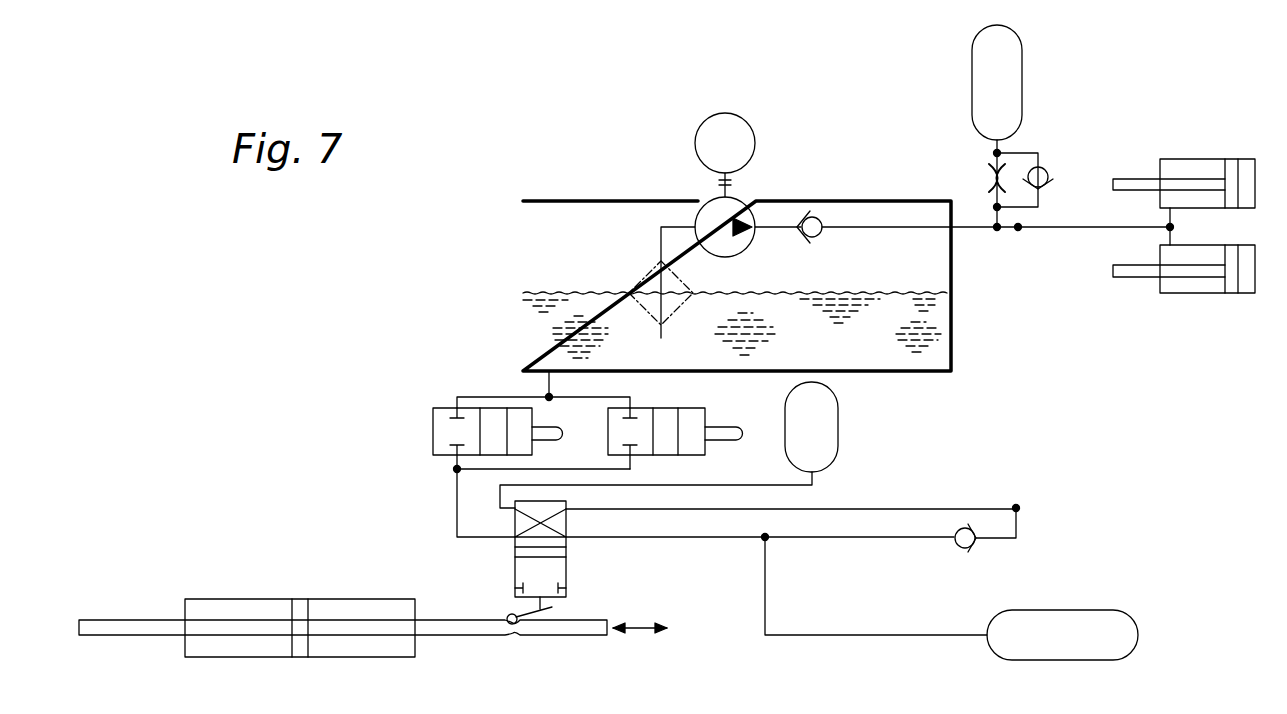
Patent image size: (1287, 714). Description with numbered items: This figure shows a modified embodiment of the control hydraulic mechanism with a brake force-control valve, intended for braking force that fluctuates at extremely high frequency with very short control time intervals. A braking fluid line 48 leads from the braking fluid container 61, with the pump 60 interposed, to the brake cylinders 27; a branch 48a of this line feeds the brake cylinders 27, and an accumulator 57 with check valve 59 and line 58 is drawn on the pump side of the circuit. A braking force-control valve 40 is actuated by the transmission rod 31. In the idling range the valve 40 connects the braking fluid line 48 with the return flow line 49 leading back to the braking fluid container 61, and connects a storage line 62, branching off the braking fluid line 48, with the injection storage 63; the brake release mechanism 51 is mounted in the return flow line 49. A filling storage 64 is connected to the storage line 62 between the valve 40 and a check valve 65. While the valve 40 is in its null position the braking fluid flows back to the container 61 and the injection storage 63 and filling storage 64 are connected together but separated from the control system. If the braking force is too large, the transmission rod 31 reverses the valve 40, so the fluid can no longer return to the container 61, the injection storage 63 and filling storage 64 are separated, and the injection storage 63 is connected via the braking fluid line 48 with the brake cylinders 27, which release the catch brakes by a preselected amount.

The brake cylinders 27 is at (1198, 158).
The transmission rod 31 is at (465, 637).
The braking force-control valve 40 is at (568, 568).
The braking fluid line 48 is at (1016, 460).
The branch conduit 48a is at (1068, 229).
The return flow line 49 is at (457, 500).
The brake release mechanism 51 is at (436, 407).
The pressure accumulator 57 is at (1022, 55).
The pressure line 58 is at (897, 226).
The check valve 59 is at (818, 216).
The pump 60 is at (740, 198).
The braking fluid container 61 is at (522, 265).
The storage line 62 is at (729, 540).
The injection storage 63 is at (838, 430).
The filling storage 64 is at (1087, 610).
The check valve 65 is at (974, 545).